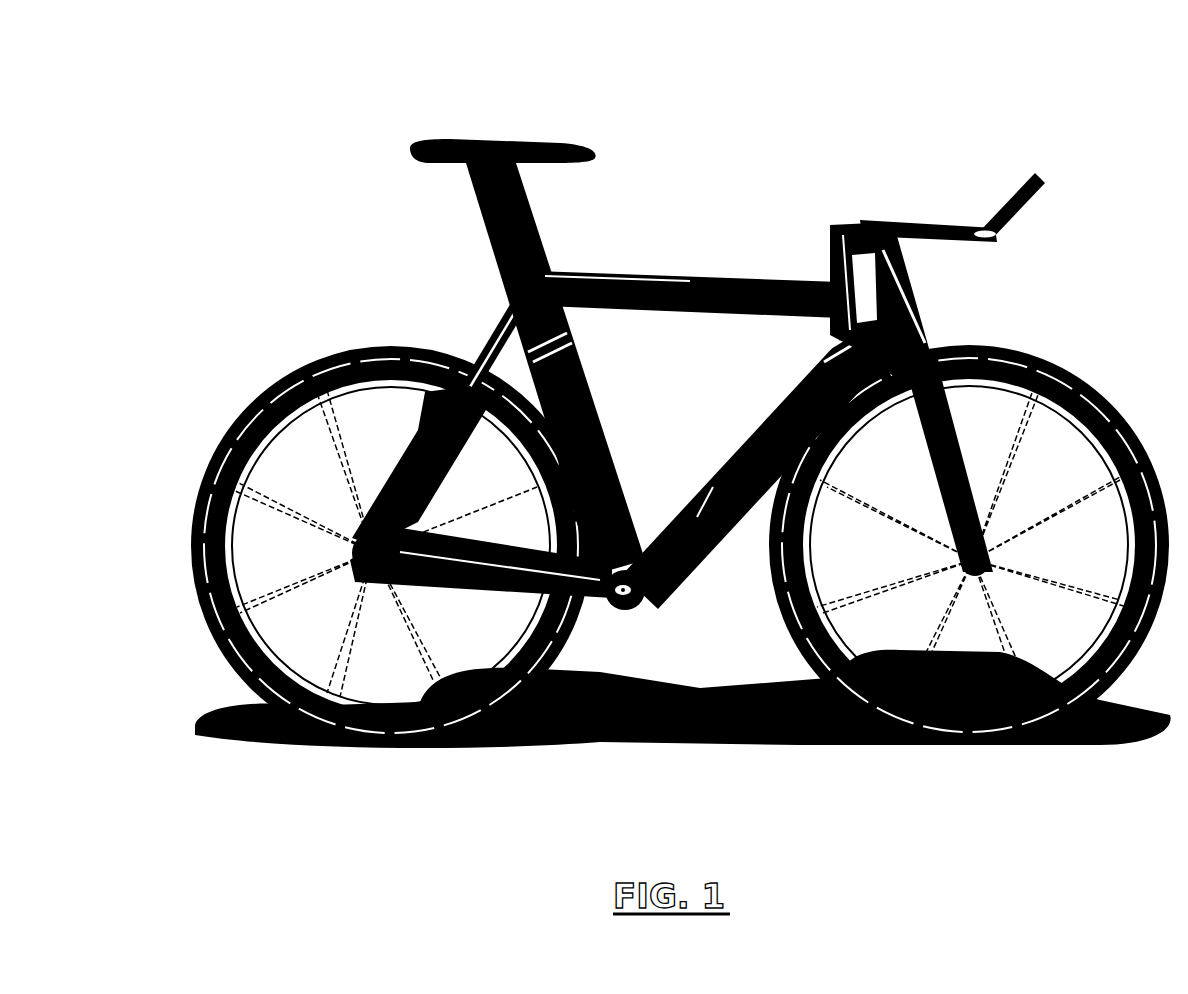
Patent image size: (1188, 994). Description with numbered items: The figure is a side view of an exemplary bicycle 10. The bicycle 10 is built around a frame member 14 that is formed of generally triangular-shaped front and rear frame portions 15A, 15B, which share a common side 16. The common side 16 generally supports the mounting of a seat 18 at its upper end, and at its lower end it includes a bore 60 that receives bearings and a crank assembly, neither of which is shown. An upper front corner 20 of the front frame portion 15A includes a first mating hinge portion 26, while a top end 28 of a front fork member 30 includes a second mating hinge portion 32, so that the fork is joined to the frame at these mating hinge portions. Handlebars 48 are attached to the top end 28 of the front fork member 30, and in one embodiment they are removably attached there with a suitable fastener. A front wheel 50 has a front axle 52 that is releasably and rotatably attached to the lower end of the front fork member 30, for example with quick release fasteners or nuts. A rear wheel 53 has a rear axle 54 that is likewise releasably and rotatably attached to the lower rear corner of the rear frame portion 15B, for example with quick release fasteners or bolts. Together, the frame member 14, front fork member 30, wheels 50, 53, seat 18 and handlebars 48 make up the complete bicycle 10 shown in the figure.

The bicycle 10 is at (668, 387).
The frame member 14 is at (673, 275).
The front frame portion 15A is at (518, 552).
The rear frame portion 15B is at (690, 548).
The common side 16 is at (580, 365).
The seat 18 is at (478, 140).
The upper front corner 20 is at (902, 339).
The first mating hinge portion 26 is at (827, 247).
The top end 28 is at (974, 404).
The front fork member 30 is at (947, 413).
The second mating hinge portion 32 is at (913, 318).
The handlebars 48 is at (910, 222).
The front wheel 50 is at (1093, 373).
The front axle 52 is at (1010, 557).
The rear wheel 53 is at (242, 402).
The rear axle 54 is at (320, 543).
The bore 60 is at (625, 605).